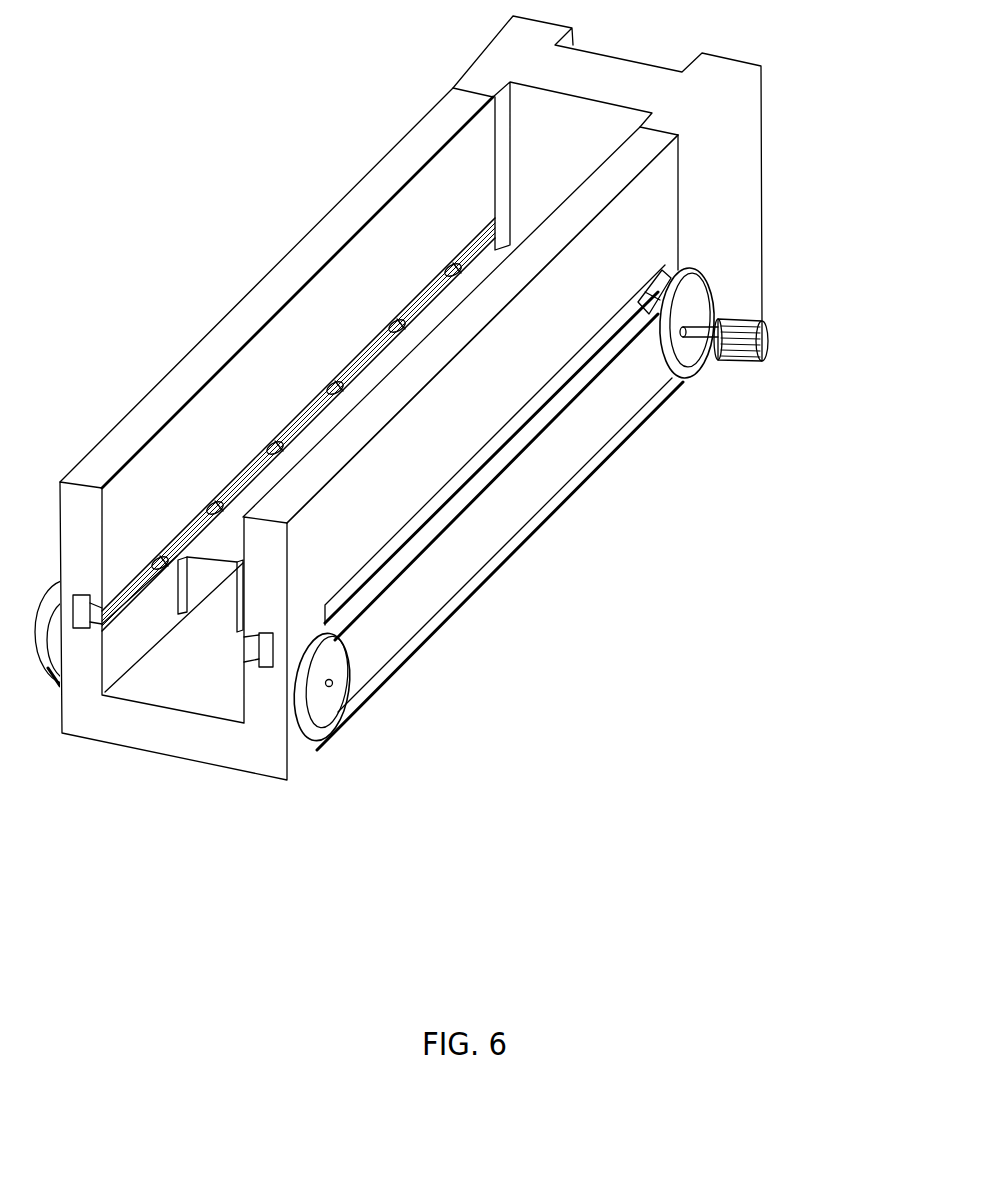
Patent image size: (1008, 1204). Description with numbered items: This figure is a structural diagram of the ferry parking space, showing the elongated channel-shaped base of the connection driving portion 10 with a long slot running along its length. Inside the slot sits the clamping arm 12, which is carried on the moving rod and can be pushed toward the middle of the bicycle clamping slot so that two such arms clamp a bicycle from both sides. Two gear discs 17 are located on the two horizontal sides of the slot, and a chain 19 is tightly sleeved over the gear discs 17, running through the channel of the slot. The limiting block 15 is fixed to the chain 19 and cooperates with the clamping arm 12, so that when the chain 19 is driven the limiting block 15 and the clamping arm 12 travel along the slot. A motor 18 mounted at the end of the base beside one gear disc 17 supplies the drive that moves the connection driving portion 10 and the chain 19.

The connection driving portion 10 is at (743, 190).
The clamping arm 12 is at (212, 578).
The limiting block 15 is at (645, 305).
The gear disc 17 is at (678, 355).
The motor 18 is at (763, 337).
The chain 19 is at (540, 530).